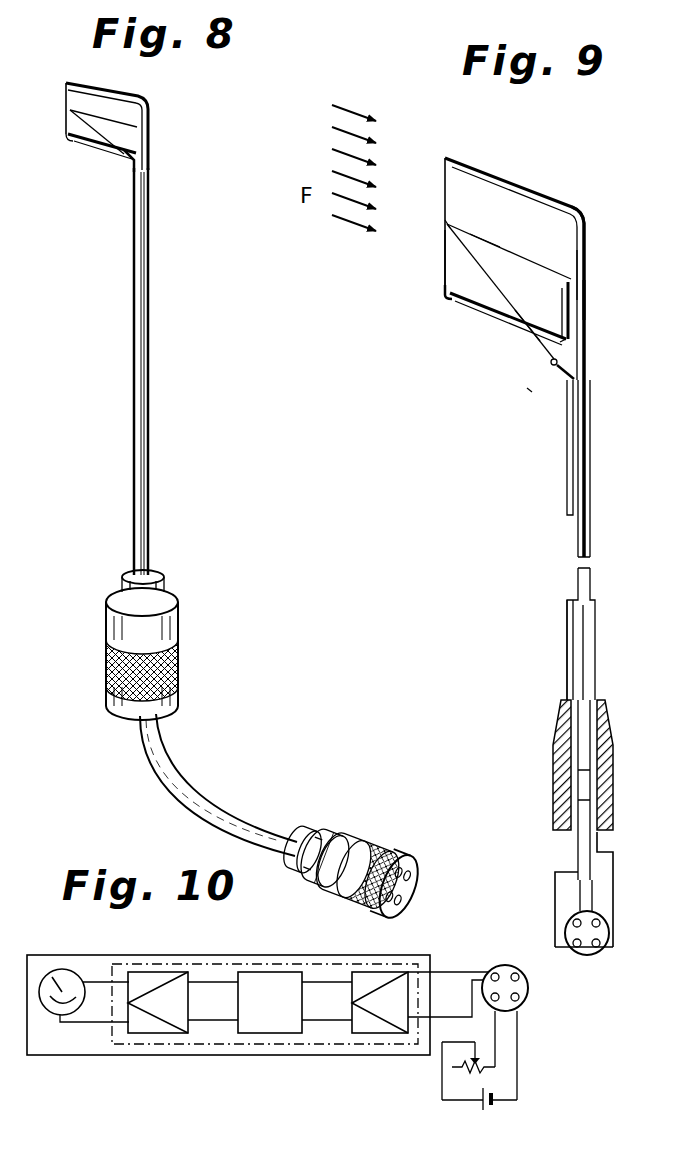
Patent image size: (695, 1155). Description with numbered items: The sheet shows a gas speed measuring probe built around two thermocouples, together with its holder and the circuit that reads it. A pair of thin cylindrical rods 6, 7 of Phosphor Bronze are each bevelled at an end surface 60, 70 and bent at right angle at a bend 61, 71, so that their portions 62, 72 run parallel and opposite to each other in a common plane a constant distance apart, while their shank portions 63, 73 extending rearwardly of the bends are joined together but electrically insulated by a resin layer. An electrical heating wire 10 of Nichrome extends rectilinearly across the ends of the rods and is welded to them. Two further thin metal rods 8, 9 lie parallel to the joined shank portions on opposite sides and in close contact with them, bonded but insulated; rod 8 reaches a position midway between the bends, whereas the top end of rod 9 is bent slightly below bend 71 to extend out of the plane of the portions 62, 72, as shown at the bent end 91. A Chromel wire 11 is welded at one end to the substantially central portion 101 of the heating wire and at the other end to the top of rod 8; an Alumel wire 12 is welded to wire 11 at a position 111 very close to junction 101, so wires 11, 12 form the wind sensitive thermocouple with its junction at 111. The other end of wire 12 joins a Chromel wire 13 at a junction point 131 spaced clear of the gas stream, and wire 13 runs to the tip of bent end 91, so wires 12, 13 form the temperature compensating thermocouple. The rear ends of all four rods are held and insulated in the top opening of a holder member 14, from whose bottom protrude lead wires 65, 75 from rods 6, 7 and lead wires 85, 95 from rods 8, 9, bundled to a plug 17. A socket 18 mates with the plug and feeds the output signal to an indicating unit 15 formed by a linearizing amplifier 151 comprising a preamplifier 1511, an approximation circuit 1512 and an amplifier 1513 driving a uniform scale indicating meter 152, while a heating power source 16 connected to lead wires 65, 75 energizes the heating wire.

In FIG. 8, the thin cylindrical rod 6 is at (124, 96).
In FIG. 9, the thin cylindrical rod 6 is at (596, 273).
In FIG. 8, the thin cylindrical rod 7 is at (80, 140).
In FIG. 9, the thin cylindrical rod 7 is at (549, 380).
In FIG. 8, the thin metal rod 8 is at (147, 132).
In FIG. 9, the thin metal rod 8 is at (588, 298).
In FIG. 8, the thin metal rod 9 is at (152, 221).
In FIG. 9, the thin metal rod 9 is at (597, 402).
In FIG. 8, the electrical heating wire 10 is at (66, 121).
In FIG. 9, the electrical heating wire 10 is at (445, 253).
In FIG. 8, the thin wire 11 is at (93, 115).
In FIG. 9, the thin wire 11 is at (531, 254).
In FIG. 8, the thin wire 12 is at (100, 142).
In FIG. 9, the thin wire 12 is at (500, 291).
In FIG. 8, the thin wire 13 is at (120, 157).
In FIG. 9, the thin wire 13 is at (551, 364).
In FIG. 8, the holder member 14 is at (178, 621).
In FIG. 9, the holder member 14 is at (615, 770).
In FIG. 10, the indicating unit 15 is at (248, 955).
In FIG. 10, the heating power source 16 is at (487, 1111).
In FIG. 8, the plug 17 is at (363, 836).
In FIG. 9, the plug 17 is at (587, 956).
In FIG. 10, the socket 18 is at (528, 992).
In FIG. 9, the bevelled end surface 60 is at (464, 226).
In FIG. 9, the bend 61 is at (585, 220).
In FIG. 9, the rod portion 62 is at (512, 187).
In FIG. 9, the shank portion 63 is at (593, 377).
In FIG. 9, the lead wire 65 is at (615, 880).
In FIG. 9, the bevelled end surface 70 is at (463, 278).
In FIG. 9, the bend 71 is at (560, 318).
In FIG. 9, the rod portion 72 is at (483, 308).
In FIG. 9, the shank portion 73 is at (553, 477).
In FIG. 9, the lead wire 75 is at (553, 885).
In FIG. 9, the lead wire 85 is at (597, 903).
In FIG. 9, the bent end 91 is at (527, 390).
In FIG. 9, the lead wire 95 is at (557, 913).
In FIG. 9, the central portion 101 is at (445, 225).
In FIG. 9, the junction 111 is at (498, 225).
In FIG. 9, the junction point 131 is at (523, 342).
In FIG. 10, the linearizing amplifier 151 is at (123, 932).
In FIG. 10, the indicating meter 152 is at (62, 967).
In FIG. 10, the preamplifier 1511 is at (370, 1033).
In FIG. 10, the approximation circuit 1512 is at (258, 1033).
In FIG. 10, the amplifier 1513 is at (153, 1033).